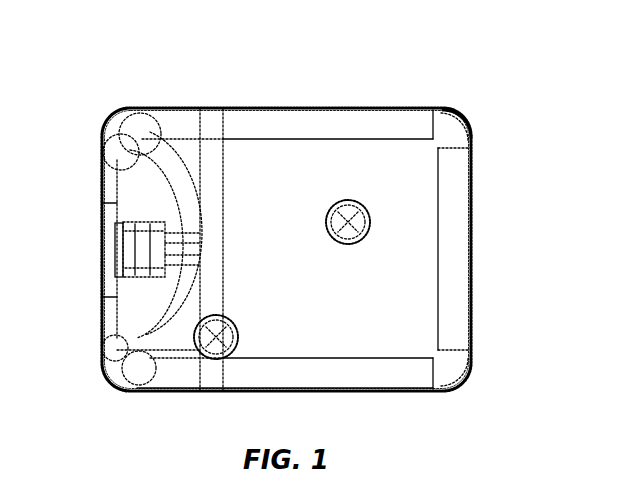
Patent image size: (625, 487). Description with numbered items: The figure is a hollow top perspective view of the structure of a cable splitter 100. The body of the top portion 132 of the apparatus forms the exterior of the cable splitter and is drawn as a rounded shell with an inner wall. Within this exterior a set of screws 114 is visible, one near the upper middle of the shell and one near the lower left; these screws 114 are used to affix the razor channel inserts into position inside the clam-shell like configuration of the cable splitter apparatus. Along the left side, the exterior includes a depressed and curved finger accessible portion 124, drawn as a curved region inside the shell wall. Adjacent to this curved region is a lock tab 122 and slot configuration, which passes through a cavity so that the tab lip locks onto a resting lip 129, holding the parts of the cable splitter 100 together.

The cable splitter 100 is at (106, 74).
The screws 114 is at (348, 200).
The lock tab 122 is at (115, 246).
The depressed and curved finger accessible portion 124 is at (138, 170).
The resting lip 129 is at (120, 258).
The top portion 132 is at (460, 115).